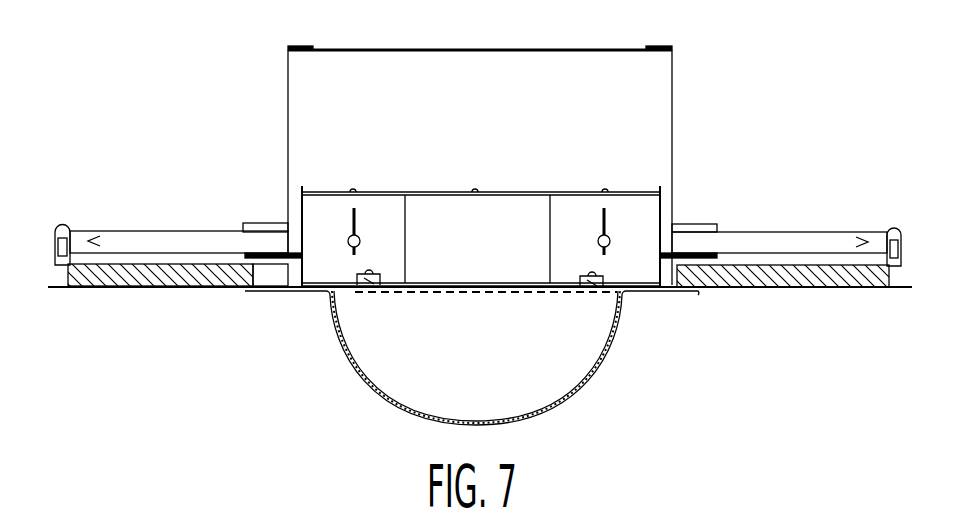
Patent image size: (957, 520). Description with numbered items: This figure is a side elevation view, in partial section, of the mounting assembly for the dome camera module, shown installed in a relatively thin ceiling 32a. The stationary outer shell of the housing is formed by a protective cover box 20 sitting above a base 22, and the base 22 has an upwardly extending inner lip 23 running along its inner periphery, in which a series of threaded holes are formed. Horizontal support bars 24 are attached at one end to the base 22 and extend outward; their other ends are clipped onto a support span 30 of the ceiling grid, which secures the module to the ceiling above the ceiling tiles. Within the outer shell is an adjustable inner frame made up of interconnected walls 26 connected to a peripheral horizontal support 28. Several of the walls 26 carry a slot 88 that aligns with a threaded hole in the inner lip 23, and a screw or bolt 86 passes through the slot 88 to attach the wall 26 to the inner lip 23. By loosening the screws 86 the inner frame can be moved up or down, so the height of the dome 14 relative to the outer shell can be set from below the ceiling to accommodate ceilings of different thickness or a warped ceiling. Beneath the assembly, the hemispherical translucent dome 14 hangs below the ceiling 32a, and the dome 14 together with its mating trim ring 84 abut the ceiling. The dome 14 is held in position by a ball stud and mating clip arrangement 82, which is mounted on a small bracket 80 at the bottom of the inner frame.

The protective cover box 20 is at (411, 62).
The walls 26 is at (337, 196).
The peripheral horizontal support 28 is at (313, 193).
The slot 88 is at (350, 209).
The screw or bolt 86 is at (350, 247).
The bracket 80 is at (371, 274).
The ball stud and mating clip arrangement 82 is at (368, 290).
The horizontal support bars 24 is at (124, 230).
The inner lip 23 is at (675, 236).
The support span 30 is at (62, 288).
The relatively thin ceiling 32a is at (175, 288).
The base 22 is at (243, 286).
The trim ring 84 is at (287, 292).
The dome 14 is at (577, 392).